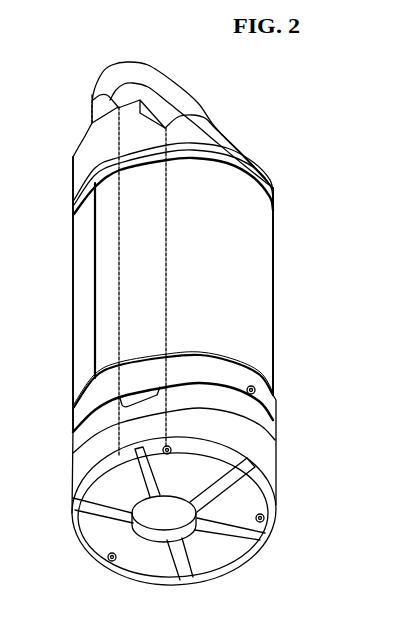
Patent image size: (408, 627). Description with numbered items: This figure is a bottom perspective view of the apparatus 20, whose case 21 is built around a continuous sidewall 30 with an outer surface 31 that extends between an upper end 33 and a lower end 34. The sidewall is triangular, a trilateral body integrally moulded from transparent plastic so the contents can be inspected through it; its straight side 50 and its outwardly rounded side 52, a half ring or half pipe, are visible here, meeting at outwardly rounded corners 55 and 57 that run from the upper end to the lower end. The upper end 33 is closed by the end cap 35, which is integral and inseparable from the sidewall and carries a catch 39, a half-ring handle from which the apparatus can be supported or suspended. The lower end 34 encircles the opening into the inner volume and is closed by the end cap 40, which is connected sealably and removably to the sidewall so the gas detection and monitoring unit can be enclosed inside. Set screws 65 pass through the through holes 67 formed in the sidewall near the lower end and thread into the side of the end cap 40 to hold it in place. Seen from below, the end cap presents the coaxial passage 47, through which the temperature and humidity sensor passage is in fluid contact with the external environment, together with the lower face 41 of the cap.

The apparatus 20 is at (296, 185).
The case 21 is at (73, 268).
The continuous sidewall 30 is at (274, 322).
The outer surface 31 is at (260, 267).
The upper end 33 is at (275, 205).
The lower end 34 is at (273, 413).
The end cap 35 is at (88, 148).
The catch 39 is at (152, 80).
The end cap 40 is at (268, 437).
The end face 41 is at (110, 535).
The coaxial passage 47 is at (170, 515).
The side 50 is at (143, 265).
The side 52 is at (72, 330).
The corner 55 is at (108, 210).
The corner 57 is at (260, 295).
The set screws 65 is at (257, 391).
The through holes 67 is at (263, 385).